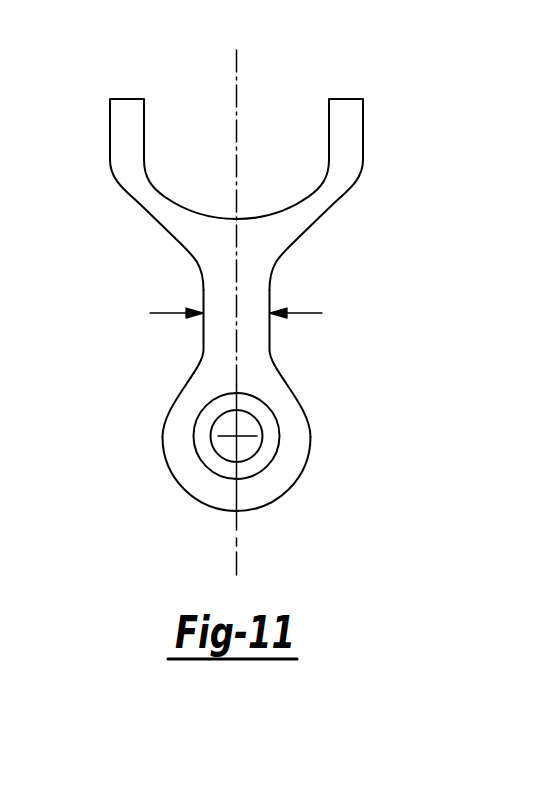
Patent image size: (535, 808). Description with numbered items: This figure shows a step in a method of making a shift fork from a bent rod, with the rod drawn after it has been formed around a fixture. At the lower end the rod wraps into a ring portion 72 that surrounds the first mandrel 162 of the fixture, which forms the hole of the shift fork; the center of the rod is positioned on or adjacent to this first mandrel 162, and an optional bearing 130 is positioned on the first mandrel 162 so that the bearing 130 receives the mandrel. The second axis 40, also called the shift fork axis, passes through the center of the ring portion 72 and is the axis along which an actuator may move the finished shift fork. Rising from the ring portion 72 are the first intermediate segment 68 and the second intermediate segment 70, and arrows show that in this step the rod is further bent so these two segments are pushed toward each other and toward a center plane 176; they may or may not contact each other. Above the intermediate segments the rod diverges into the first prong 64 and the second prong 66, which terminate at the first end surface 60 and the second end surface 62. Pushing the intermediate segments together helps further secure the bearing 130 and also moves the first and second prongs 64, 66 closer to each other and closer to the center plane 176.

The first end surface 60 is at (127, 98).
The second end surface 62 is at (347, 98).
The first prong 64 is at (110, 158).
The second prong 66 is at (363, 157).
The first intermediate segment 68 is at (203, 338).
The second intermediate segment 70 is at (270, 338).
The ring portion 72 is at (290, 488).
The second axis 40 is at (240, 438).
The first mandrel 162 is at (212, 440).
The bearing 130 is at (217, 473).
The center plane 176 is at (236, 555).